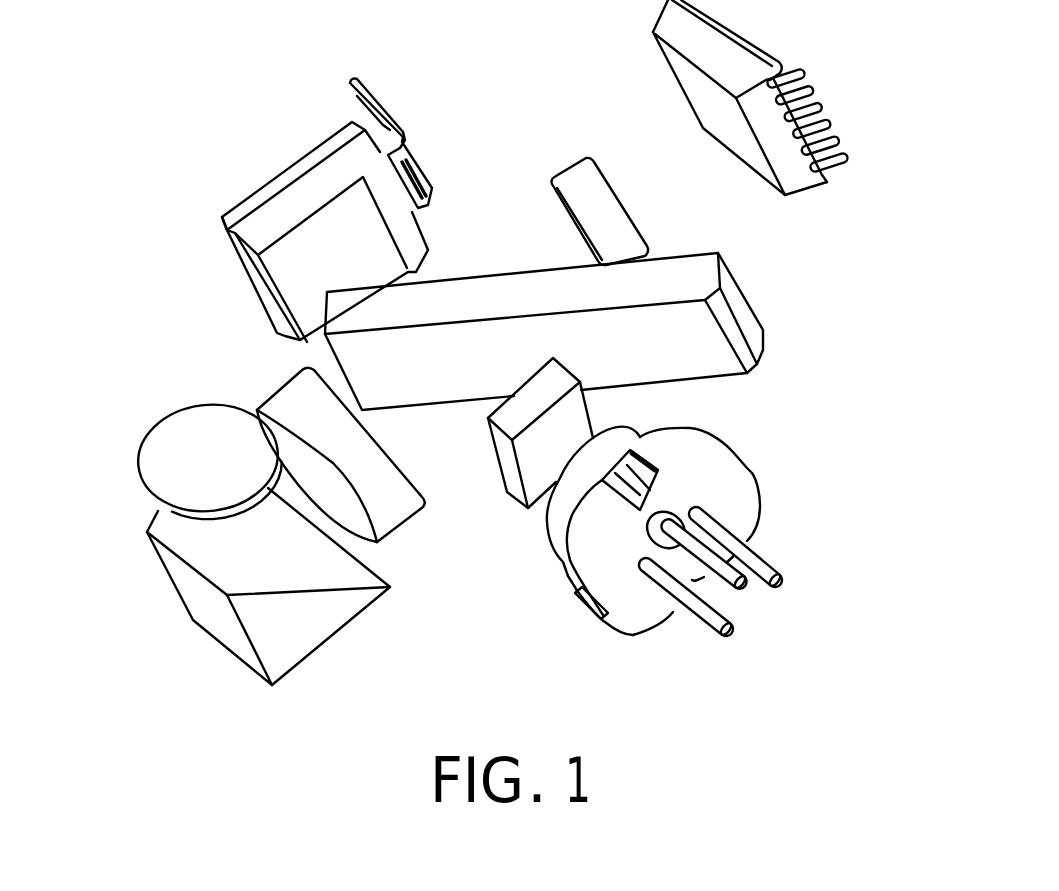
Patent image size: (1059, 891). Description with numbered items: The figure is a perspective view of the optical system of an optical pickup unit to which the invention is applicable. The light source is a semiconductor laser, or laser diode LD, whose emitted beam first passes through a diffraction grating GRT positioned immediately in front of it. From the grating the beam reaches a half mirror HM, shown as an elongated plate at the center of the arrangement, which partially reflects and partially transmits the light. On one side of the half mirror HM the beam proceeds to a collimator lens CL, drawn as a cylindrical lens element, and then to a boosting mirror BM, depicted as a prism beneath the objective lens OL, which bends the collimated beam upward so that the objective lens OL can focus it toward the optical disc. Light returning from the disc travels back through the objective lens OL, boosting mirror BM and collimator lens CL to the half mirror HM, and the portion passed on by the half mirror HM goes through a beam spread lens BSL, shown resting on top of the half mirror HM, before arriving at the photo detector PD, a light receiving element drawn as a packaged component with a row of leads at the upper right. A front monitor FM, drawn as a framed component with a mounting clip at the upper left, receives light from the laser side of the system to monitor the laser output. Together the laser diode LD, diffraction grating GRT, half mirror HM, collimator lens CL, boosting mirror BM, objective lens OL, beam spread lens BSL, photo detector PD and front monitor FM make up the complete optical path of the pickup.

The front monitor FM is at (278, 178).
The beam spread lens BSL is at (578, 175).
The photo detector PD is at (803, 183).
The half mirror HM is at (722, 373).
The diffraction grating GRT is at (508, 497).
The semiconductor laser LD is at (692, 580).
The collimator lens CL is at (288, 382).
The objective lens OL is at (153, 433).
The boosting mirror BM is at (330, 643).